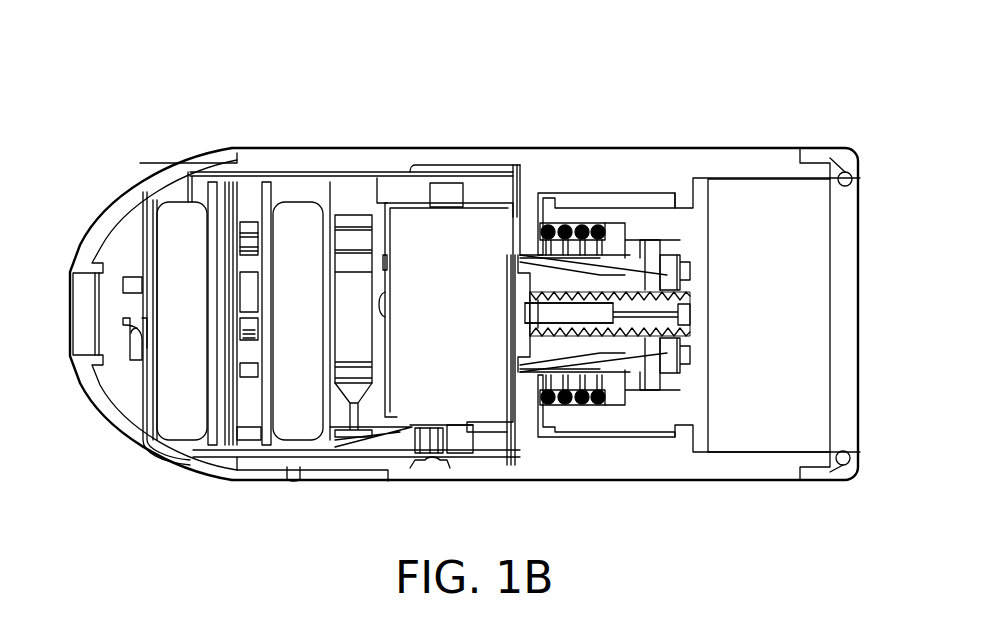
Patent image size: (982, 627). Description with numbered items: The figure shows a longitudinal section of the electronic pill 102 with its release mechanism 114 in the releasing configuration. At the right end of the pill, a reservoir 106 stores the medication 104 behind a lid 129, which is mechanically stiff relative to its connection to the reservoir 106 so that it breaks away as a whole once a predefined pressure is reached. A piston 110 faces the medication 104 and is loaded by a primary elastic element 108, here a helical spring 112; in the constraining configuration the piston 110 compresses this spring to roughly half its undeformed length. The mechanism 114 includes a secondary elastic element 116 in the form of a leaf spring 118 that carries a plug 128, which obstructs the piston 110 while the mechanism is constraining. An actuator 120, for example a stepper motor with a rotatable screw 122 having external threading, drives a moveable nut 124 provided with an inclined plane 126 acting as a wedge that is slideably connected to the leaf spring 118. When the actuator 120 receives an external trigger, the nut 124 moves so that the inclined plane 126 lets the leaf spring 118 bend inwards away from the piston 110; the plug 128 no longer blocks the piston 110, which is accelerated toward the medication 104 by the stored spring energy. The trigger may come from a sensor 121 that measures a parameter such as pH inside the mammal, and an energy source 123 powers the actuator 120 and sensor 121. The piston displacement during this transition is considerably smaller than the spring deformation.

The electronic pill 102 is at (172, 98).
The medication 104 is at (770, 407).
The reservoir 106 is at (750, 178).
The primary elastic element 108 is at (566, 226).
The piston 110 is at (655, 407).
The helical spring 112 is at (618, 175).
The mechanism 114 is at (620, 265).
The secondary elastic element 116 is at (662, 174).
The leaf spring 118 is at (684, 224).
The actuator 120 is at (423, 228).
The sensor 121 is at (177, 430).
The rotatable screw 122 is at (653, 325).
The energy source 123 is at (307, 427).
The moveable nut 124 is at (542, 285).
The inclined plane 126 is at (600, 270).
The plug 128 is at (653, 263).
The lid 129 is at (840, 407).